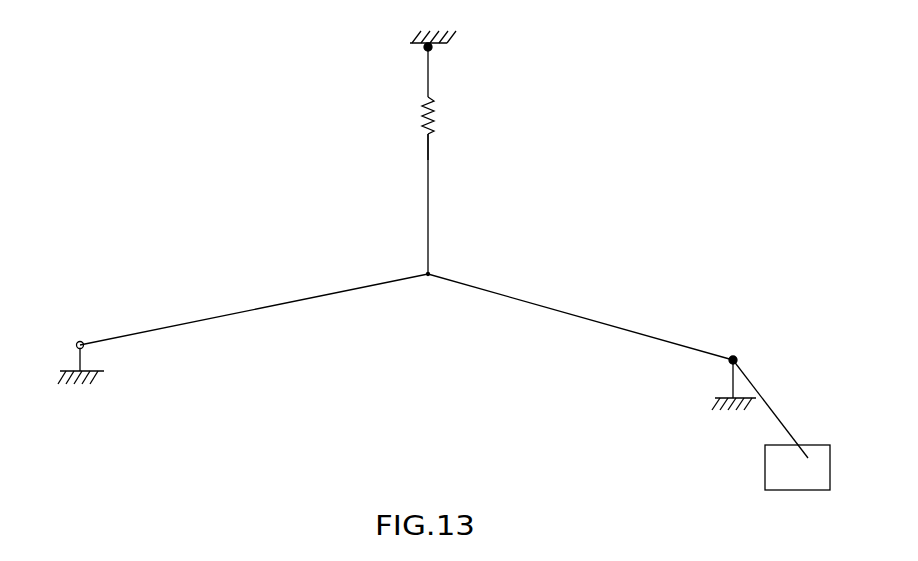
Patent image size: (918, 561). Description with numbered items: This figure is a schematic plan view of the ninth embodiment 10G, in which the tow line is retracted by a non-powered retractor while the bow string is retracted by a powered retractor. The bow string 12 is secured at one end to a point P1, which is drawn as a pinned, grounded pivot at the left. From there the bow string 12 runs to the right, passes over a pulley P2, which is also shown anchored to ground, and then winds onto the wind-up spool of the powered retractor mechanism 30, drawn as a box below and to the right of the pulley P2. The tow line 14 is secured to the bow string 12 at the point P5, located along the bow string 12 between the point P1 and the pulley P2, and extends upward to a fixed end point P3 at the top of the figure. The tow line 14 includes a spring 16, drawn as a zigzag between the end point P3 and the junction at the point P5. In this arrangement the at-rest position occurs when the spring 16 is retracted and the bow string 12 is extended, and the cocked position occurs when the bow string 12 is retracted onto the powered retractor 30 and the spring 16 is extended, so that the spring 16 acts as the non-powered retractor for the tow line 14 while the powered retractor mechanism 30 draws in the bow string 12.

The alternative embodiment 10G is at (619, 132).
The bow string 12 is at (566, 312).
The tow line 14 is at (428, 196).
The spring 16 is at (431, 111).
The powered retractor mechanism 30 is at (808, 450).
The point P1 is at (77, 343).
The pulley P2 is at (738, 358).
The end point P3 is at (433, 49).
The point P5 is at (426, 277).